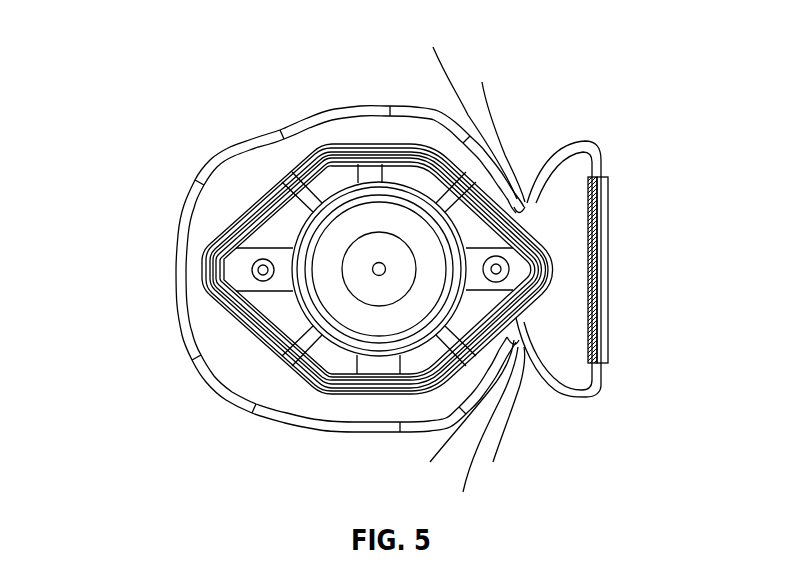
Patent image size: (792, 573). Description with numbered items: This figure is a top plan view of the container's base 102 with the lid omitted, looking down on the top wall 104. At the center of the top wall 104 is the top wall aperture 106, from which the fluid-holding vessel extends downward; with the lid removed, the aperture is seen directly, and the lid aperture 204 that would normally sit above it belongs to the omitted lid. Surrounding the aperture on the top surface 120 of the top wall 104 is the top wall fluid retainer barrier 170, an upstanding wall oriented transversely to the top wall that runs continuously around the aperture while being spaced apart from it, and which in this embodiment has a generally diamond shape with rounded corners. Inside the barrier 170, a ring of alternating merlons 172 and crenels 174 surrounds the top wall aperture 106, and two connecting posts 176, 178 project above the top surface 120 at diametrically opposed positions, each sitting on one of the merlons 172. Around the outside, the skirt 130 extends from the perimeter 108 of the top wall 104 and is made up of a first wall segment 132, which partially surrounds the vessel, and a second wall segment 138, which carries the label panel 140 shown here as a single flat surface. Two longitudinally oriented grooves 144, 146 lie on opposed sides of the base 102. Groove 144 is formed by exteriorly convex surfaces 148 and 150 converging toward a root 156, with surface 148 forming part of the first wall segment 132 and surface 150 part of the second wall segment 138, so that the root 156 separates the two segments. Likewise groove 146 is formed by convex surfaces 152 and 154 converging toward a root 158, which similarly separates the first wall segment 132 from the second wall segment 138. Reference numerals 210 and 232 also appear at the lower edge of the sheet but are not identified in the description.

The base 102 is at (200, 394).
The top wall 104 is at (250, 185).
The top wall aperture 106 is at (345, 338).
The perimeter 108 is at (255, 258).
The top surface 120 is at (270, 154).
The skirt 130 is at (324, 233).
The first wall segment 132 is at (220, 150).
The second wall segment 138 is at (582, 138).
The label panel 140 is at (608, 262).
The groove 144 is at (499, 421).
The groove 146 is at (523, 145).
The exteriorly convex surface 148 is at (463, 419).
The exteriorly convex surface 150 is at (522, 388).
The exteriorly convex surface 152 is at (466, 107).
The exteriorly convex surface 154 is at (557, 137).
The root 156 is at (480, 436).
The root 158 is at (493, 125).
The top wall fluid retainer barrier 170 is at (225, 307).
The merlons 172 is at (371, 168).
The crenels 174 is at (338, 182).
The connecting post 176 is at (234, 250).
The connecting post 178 is at (553, 286).
The lid aperture 204 is at (688, 572).
The component 210 is at (607, 572).
The component 232 is at (541, 572).